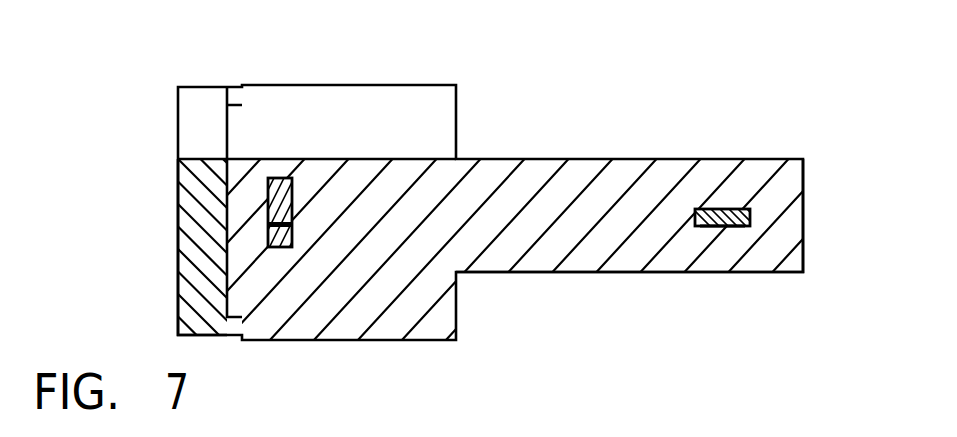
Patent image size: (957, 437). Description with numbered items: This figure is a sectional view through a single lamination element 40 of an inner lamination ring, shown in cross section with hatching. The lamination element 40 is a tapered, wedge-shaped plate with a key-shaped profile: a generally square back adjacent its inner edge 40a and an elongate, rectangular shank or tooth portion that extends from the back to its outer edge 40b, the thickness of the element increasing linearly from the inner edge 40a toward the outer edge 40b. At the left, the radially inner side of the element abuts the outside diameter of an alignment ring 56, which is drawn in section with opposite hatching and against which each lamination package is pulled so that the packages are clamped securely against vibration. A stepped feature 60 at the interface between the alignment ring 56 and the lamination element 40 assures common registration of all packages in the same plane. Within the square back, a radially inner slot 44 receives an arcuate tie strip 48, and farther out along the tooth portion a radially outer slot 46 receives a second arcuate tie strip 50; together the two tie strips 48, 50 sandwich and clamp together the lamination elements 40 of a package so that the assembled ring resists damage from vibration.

The stepped feature 60 is at (244, 74).
The lamination element 40 is at (594, 159).
The inner edge 40a is at (227, 131).
The outer edge 40b is at (803, 257).
The alignment ring 56 is at (178, 192).
The arcuate tie strip 48 is at (275, 178).
The radially inner slot 44 is at (262, 225).
The arcuate tie strip 50 is at (710, 217).
The radially outer slot 46 is at (721, 234).